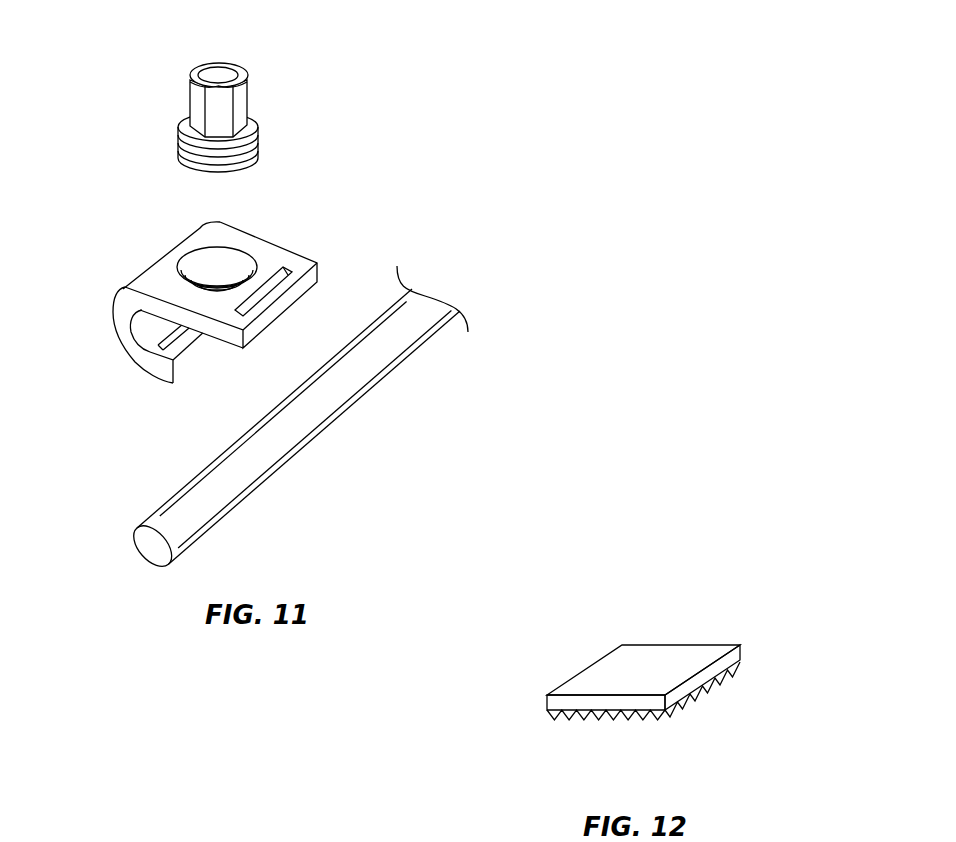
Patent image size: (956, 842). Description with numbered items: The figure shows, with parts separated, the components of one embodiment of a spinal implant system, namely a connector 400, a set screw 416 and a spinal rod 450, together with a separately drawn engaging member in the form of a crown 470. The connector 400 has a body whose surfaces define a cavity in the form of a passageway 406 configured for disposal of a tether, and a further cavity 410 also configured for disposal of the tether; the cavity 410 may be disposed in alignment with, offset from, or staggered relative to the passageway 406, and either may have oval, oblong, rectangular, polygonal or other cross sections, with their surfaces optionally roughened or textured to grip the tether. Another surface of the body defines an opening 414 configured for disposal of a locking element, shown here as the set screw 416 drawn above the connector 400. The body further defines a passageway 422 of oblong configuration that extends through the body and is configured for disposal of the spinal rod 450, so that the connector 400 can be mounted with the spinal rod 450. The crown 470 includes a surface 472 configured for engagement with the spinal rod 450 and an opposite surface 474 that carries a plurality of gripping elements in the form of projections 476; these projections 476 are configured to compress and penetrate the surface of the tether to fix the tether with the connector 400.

In FIG. 11, the connector 400 is at (203, 316).
In FIG. 11, the passageway 406 is at (125, 382).
In FIG. 11, the cavity 410 is at (286, 268).
In FIG. 11, the opening 414 is at (229, 252).
In FIG. 11, the set screw 416 is at (241, 97).
In FIG. 11, the passageway 422 is at (176, 356).
In FIG. 11, the spinal rod 450 is at (305, 420).
In FIG. 12, the crown 470 is at (650, 694).
In FIG. 12, the surface 472 is at (600, 670).
In FIG. 12, the surface 474 is at (562, 715).
In FIG. 12, the projections 476 is at (582, 718).